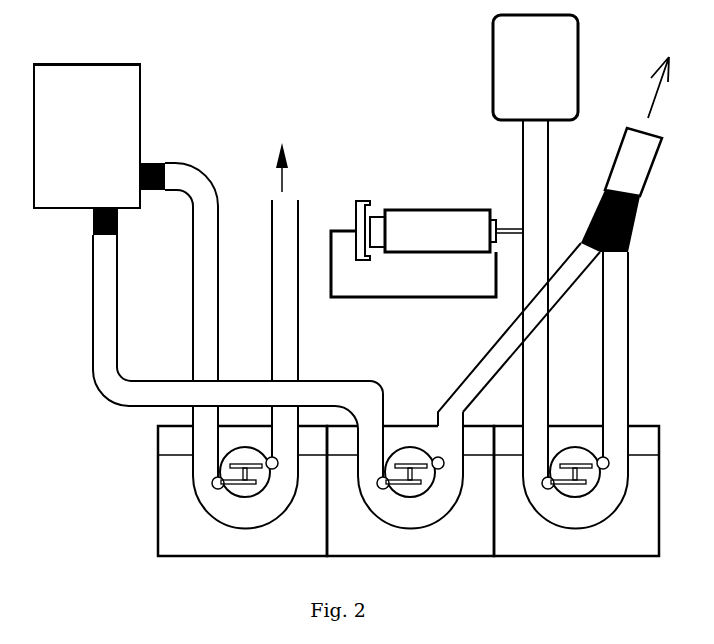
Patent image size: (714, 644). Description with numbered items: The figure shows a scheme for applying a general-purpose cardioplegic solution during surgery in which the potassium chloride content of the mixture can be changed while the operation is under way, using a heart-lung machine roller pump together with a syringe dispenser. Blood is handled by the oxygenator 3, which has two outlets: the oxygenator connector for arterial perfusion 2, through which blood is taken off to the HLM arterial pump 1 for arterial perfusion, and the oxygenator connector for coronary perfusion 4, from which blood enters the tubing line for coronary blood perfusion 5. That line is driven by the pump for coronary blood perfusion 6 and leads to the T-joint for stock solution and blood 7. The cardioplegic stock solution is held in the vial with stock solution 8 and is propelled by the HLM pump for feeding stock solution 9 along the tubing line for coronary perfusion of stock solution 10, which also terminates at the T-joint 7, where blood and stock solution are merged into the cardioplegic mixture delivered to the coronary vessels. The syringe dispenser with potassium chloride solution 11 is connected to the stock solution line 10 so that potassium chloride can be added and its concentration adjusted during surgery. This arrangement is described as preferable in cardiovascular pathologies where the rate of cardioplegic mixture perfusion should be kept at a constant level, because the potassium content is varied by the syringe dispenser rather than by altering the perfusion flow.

The HLM arterial pump 1 is at (242, 481).
The oxygenator connector for arterial perfusion 2 is at (179, 302).
The oxygenator 3 is at (87, 136).
The oxygenator connector for coronary perfusion 4 is at (83, 230).
The tubing line for coronary blood perfusion 5 is at (217, 356).
The pump for coronary blood perfusion 6 is at (410, 484).
The T-joint for stock solution and blood 7 is at (552, 277).
The vial with stock solution 8 is at (535, 67).
The HLM pump for feeding stock solution 9 is at (576, 404).
The tubing line for coronary perfusion of stock solution 10 is at (516, 299).
The syringe dispenser with potassium chloride solution 11 is at (427, 249).